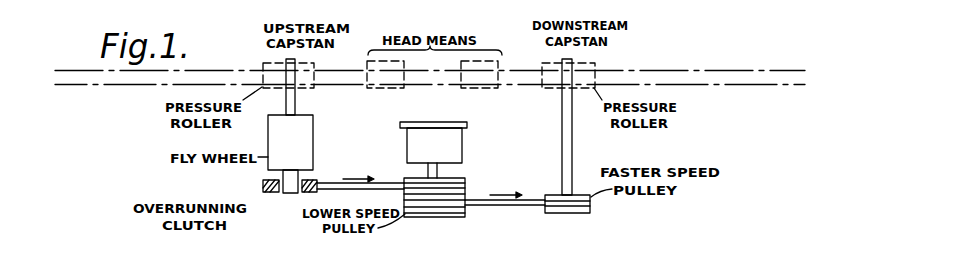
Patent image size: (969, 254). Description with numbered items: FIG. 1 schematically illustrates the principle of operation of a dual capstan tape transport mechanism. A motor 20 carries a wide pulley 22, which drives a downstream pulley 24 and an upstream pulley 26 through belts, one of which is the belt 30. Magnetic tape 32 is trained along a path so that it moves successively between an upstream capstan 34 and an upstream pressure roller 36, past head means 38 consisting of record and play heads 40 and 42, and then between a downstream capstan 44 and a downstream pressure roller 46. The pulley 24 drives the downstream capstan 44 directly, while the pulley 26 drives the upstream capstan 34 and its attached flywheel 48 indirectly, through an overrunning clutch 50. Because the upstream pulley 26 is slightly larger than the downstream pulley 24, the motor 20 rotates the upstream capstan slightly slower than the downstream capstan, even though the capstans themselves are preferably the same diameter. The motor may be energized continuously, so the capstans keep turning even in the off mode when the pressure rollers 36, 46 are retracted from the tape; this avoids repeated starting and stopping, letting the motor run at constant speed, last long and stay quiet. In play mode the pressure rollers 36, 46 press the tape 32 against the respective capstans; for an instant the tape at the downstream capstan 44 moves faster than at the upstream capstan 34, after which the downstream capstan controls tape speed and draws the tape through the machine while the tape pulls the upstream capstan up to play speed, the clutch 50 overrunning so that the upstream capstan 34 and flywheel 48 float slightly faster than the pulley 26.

The motor 20 is at (462, 154).
The wide pulley 22 is at (468, 216).
The downstream pulley 24 is at (592, 208).
The upstream pulley 26 is at (262, 186).
The belt 30 is at (430, 65).
The magnetic tape 32 is at (139, 84).
The upstream capstan 34 is at (286, 59).
The upstream pressure roller 36 is at (314, 66).
The head means 38 is at (385, 181).
The record head 40 is at (381, 89).
The play head 42 is at (480, 89).
The downstream capstan 44 is at (575, 59).
The downstream pressure roller 46 is at (546, 60).
The flywheel 48 is at (301, 143).
The overrunning clutch 50 is at (277, 194).